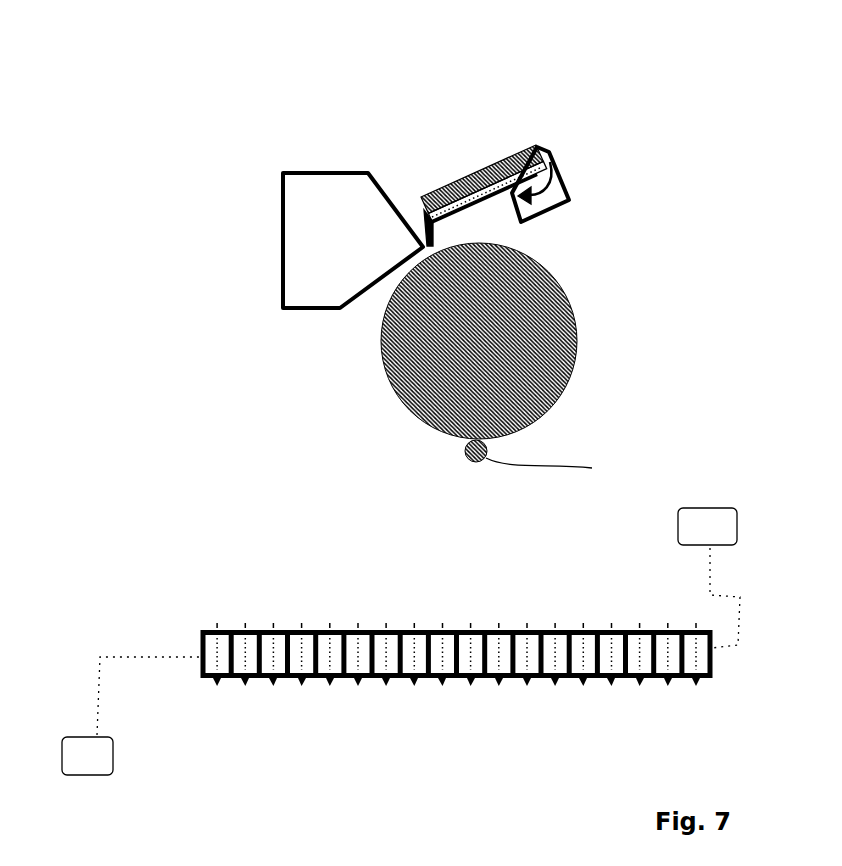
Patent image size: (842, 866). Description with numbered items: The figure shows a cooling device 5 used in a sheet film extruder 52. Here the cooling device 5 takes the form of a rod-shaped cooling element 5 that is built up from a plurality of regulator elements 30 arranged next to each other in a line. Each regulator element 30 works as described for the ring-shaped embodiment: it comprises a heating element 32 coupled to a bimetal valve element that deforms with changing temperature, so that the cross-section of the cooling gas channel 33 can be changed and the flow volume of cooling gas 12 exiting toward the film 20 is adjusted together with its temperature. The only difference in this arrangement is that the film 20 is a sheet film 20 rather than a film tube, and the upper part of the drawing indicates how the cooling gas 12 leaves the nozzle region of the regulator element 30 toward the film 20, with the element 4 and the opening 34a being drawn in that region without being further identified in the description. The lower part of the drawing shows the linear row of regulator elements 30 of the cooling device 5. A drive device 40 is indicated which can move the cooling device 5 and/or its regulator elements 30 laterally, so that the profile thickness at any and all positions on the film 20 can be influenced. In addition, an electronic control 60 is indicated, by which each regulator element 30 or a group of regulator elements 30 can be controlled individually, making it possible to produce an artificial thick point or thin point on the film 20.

The sheet film extruder 52 is at (650, 86).
The cooling device 5 is at (590, 160).
The regulator element 30 is at (425, 245).
The nozzle opening 34a is at (441, 196).
The heating element 32 is at (480, 192).
The cooling gas channel 33 is at (503, 180).
The cooling gas 12 is at (477, 217).
The powder hopper 4 is at (293, 311).
The sheet film 20 is at (565, 400).
The drive device 40 is at (132, 716).
The electronic control 60 is at (709, 578).